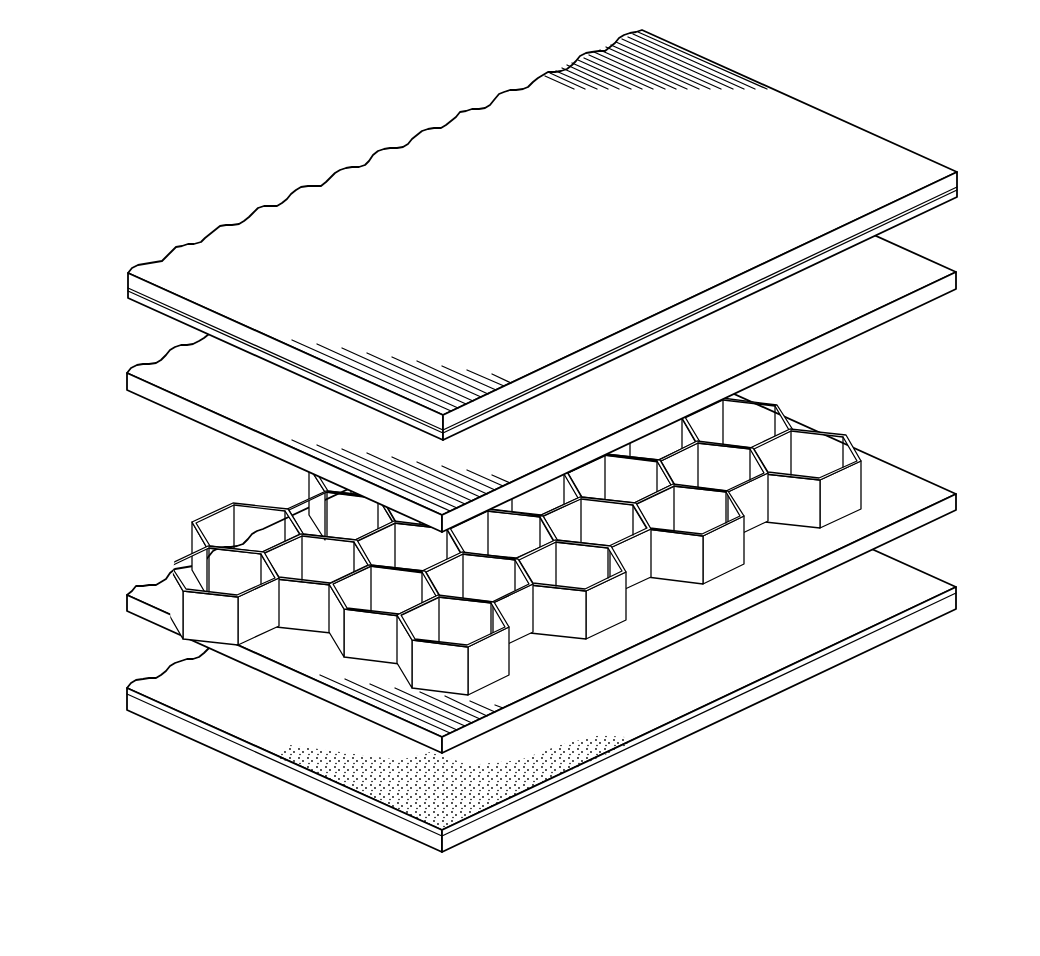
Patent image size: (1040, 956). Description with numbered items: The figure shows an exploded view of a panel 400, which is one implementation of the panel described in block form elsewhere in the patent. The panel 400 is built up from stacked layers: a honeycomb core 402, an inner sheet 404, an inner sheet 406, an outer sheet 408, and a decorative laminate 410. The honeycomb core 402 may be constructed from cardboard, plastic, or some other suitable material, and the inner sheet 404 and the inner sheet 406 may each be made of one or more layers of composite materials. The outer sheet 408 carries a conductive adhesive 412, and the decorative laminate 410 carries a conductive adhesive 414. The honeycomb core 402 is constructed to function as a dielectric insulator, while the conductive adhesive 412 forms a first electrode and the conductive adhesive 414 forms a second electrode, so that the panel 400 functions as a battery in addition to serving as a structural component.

The panel 400 is at (318, 106).
The honeycomb core 402 is at (870, 422).
The inner sheet 404 is at (957, 503).
The inner sheet 406 is at (960, 276).
The outer sheet 408 is at (958, 605).
The decorative laminate 410 is at (960, 181).
The conductive adhesive 412 is at (934, 583).
The conductive adhesive 414 is at (947, 201).